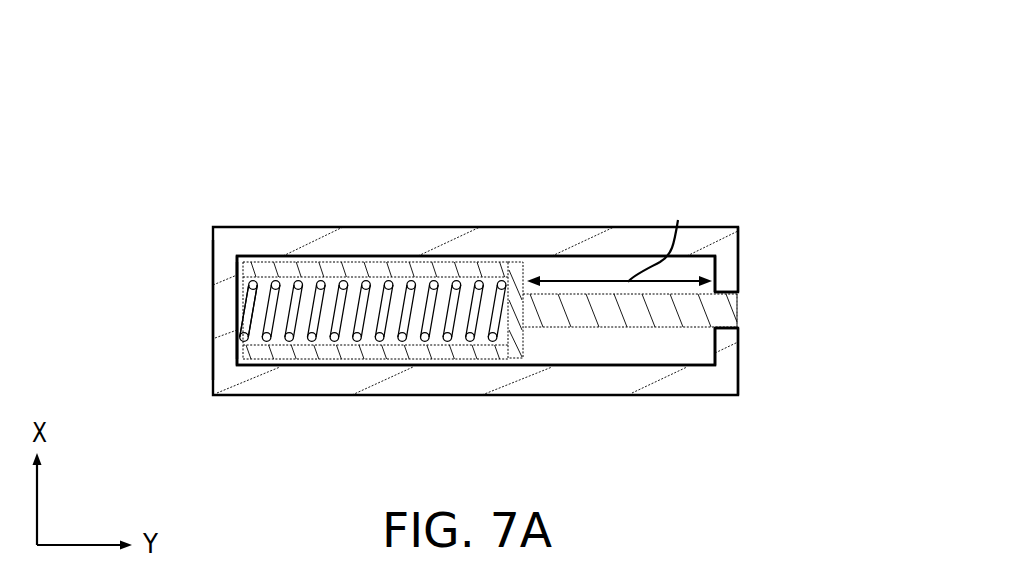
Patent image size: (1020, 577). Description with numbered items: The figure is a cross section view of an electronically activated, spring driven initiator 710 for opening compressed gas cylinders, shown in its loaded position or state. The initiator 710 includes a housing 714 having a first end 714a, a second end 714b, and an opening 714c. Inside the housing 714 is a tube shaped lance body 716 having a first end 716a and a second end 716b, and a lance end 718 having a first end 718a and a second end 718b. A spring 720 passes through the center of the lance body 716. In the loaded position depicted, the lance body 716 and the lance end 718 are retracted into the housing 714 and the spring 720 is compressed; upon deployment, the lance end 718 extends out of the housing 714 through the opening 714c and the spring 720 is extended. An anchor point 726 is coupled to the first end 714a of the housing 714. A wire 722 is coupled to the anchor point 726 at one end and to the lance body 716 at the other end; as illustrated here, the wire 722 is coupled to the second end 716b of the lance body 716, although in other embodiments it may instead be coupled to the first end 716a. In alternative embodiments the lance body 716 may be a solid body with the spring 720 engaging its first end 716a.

The initiator 710 is at (171, 108).
The housing 714 is at (455, 233).
The first end of housing 714a is at (213, 320).
The second end of housing 714b is at (738, 242).
The opening of housing 714c is at (766, 303).
The lance body 716 is at (367, 352).
The first end of lance body 716a is at (238, 353).
The second end of lance body 716b is at (521, 266).
The lance end 718 is at (622, 320).
The first end of lance end 718a is at (528, 350).
The second end of lance end 718b is at (740, 323).
The spring 720 is at (323, 293).
The wire 722 is at (263, 312).
The anchor point 726 is at (230, 310).